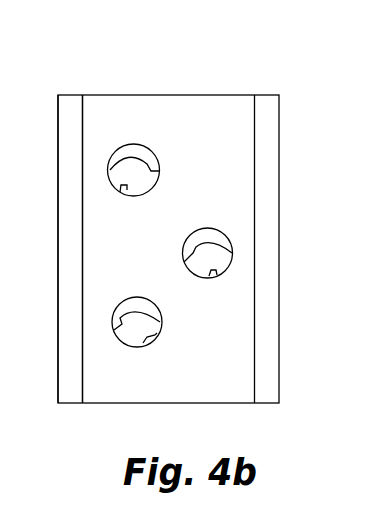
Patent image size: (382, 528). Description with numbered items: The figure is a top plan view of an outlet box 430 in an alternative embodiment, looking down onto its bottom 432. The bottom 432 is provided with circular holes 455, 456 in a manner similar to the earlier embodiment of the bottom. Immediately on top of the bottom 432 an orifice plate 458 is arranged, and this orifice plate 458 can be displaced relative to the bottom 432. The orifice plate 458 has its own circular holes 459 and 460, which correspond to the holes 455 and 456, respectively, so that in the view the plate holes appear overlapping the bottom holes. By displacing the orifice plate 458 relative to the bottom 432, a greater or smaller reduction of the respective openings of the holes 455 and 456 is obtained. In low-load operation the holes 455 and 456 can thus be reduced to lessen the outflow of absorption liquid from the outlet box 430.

The outlet box 430 is at (264, 92).
The bottom 432 is at (70, 112).
The orifice plate 458 is at (152, 108).
The circular hole 455 is at (190, 173).
The circular hole 456 is at (184, 263).
The circular hole 459 is at (118, 191).
The circular hole 460 is at (211, 276).